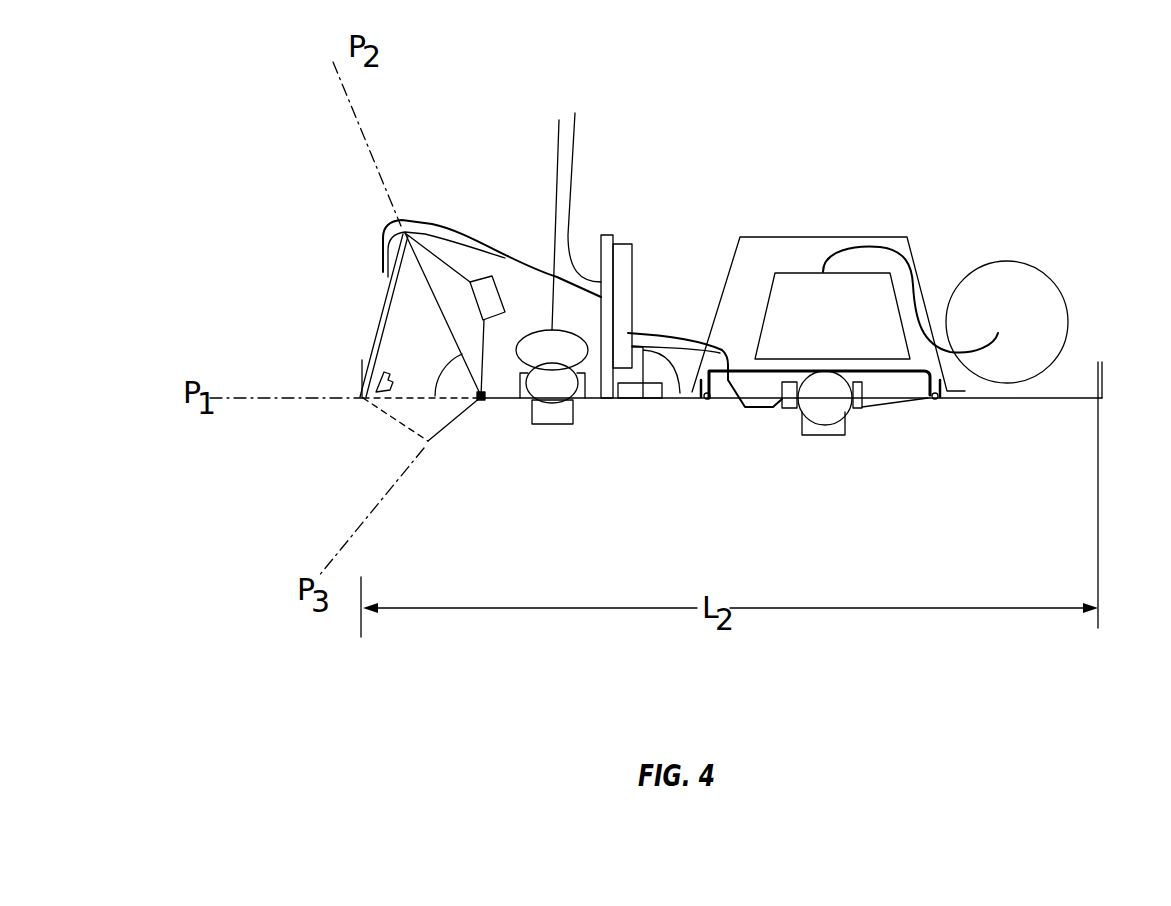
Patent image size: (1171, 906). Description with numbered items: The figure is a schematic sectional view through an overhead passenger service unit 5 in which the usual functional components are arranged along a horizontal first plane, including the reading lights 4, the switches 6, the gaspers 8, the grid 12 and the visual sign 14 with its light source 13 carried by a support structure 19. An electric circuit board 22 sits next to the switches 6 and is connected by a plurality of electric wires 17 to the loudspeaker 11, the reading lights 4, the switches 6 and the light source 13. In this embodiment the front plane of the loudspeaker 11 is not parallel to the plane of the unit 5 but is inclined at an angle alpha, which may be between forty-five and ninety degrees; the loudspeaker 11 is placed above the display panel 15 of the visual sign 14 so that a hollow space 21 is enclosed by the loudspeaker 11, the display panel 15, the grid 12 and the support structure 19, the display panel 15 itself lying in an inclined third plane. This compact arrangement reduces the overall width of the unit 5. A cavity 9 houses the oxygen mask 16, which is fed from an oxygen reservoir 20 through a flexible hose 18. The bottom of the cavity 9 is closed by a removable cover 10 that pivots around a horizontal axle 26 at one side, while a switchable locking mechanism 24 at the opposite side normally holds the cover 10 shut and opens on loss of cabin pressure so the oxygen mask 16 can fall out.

The reading lights 4 is at (816, 466).
The vehicle 5 is at (1098, 118).
The switches 6 is at (636, 392).
The gaspers 8 is at (552, 458).
The cavity 9 is at (815, 207).
The removable cover 10 is at (901, 393).
The loudspeaker 11 is at (443, 282).
The grid 12 is at (384, 446).
The light source 13 is at (388, 380).
The visual sign 14 is at (348, 422).
The display panel 15 is at (455, 418).
The oxygen mask 16 is at (797, 288).
The electric wires 17 is at (510, 252).
The flexible hose 18 is at (902, 256).
The support structure 19 is at (380, 320).
The oxygen reservoir 20 is at (1078, 268).
The hollow space 21 is at (412, 327).
The electric circuit board 22 is at (648, 222).
The locking mechanism 24 is at (935, 400).
The axle 26 is at (710, 400).